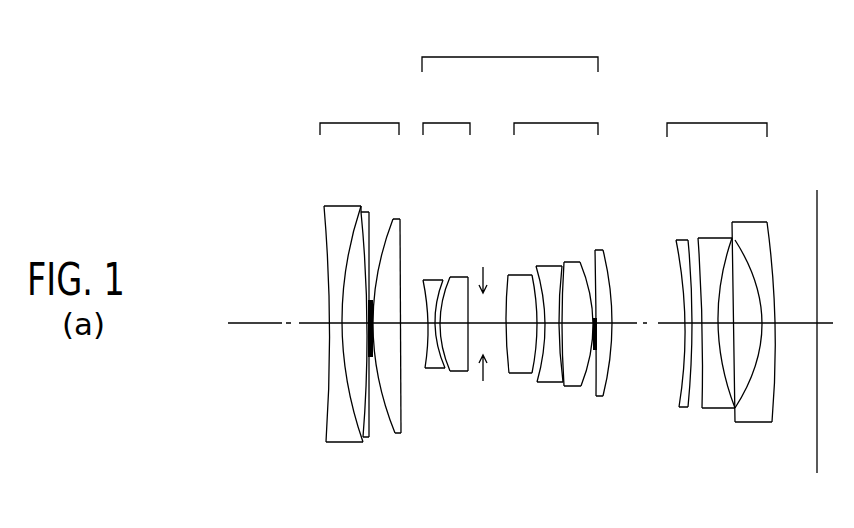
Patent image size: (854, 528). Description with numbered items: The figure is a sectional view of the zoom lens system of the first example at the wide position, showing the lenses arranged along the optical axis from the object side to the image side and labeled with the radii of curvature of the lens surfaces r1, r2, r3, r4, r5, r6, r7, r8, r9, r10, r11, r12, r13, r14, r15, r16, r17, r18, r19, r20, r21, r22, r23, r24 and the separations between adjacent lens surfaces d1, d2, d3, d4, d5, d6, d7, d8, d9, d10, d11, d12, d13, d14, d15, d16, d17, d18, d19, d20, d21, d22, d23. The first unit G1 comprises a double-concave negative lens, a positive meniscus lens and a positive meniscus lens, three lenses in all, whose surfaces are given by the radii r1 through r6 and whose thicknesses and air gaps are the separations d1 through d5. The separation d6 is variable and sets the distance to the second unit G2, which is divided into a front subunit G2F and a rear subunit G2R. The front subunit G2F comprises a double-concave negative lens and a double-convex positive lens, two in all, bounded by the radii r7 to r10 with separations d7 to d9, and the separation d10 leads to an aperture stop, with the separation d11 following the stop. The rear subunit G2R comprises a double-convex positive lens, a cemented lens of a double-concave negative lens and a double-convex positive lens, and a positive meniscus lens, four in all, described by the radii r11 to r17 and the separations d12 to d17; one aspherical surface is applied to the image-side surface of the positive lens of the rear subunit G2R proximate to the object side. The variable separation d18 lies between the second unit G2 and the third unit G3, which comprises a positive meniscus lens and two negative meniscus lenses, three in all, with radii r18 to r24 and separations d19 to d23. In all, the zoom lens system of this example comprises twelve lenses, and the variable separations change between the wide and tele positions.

The first unit G1 is at (359, 113).
The second unit G2 is at (510, 49).
The front subunit G2F is at (446, 113).
The rear subunit G2R is at (555, 113).
The third unit G3 is at (717, 114).
The radius of curvature of the first lens surface r1 is at (322, 220).
The radius of curvature of the second lens surface r2 is at (352, 228).
The radius of curvature of the third lens surface r3 is at (358, 240).
The radius of curvature of the fourth lens surface r4 is at (373, 217).
The radius of curvature of the fifth lens surface r5 is at (392, 222).
The radius of curvature of the sixth lens surface r6 is at (402, 236).
The radius of curvature of the seventh lens surface r7 is at (423, 280).
The radius of curvature of the eighth lens surface r8 is at (443, 285).
The radius of curvature of the ninth lens surface r9 is at (452, 281).
The radius of curvature of the tenth lens surface r10 is at (484, 298).
The radius of curvature of the eleventh lens surface r11 is at (506, 280).
The radius of curvature of the twelfth lens surface r12 is at (532, 284).
The radius of curvature of the thirteenth lens surface r13 is at (539, 268).
The radius of curvature of the fourteenth lens surface r14 is at (549, 265).
The radius of curvature of the fifteenth lens surface r15 is at (564, 262).
The radius of curvature of the sixteenth lens surface r16 is at (580, 262).
The radius of curvature of the seventeenth lens surface r17 is at (600, 251).
The radius of curvature of the eighteenth lens surface r18 is at (611, 275).
The radius of curvature of the nineteenth lens surface r19 is at (677, 257).
The radius of curvature of the twentieth lens surface r20 is at (688, 240).
The radius of curvature of the twenty-first lens surface r21 is at (705, 243).
The radius of curvature of the twenty-second lens surface r22 is at (725, 238).
The radius of curvature of the twenty-third lens surface r23 is at (752, 222).
The radius of curvature of the twenty-fourth lens surface r24 is at (770, 247).
The separation between adjacent lens surfaces d1 is at (332, 330).
The separation between adjacent lens surfaces d2 is at (345, 332).
The separation between adjacent lens surfaces d3 is at (366, 330).
The separation between adjacent lens surfaces d4 is at (372, 330).
The separation between adjacent lens surfaces d5 is at (388, 330).
The separation between adjacent lens surfaces d6 is at (413, 333).
The separation between adjacent lens surfaces d7 is at (431, 340).
The separation between adjacent lens surfaces d8 is at (438, 345).
The separation between adjacent lens surfaces d9 is at (455, 330).
The separation between adjacent lens surfaces d10 is at (476, 340).
The separation between adjacent lens surfaces d11 is at (495, 338).
The separation between adjacent lens surfaces d12 is at (522, 374).
The separation between adjacent lens surfaces d13 is at (546, 380).
The separation between adjacent lens surfaces d14 is at (555, 382).
The separation between adjacent lens surfaces d15 is at (572, 388).
The separation between adjacent lens surfaces d16 is at (597, 388).
The separation between adjacent lens surfaces d17 is at (606, 350).
The separation between adjacent lens surfaces d18 is at (648, 340).
The separation between adjacent lens surfaces d19 is at (683, 353).
The separation between adjacent lens surfaces d20 is at (698, 330).
The separation between adjacent lens surfaces d21 is at (710, 330).
The separation between adjacent lens surfaces d22 is at (727, 350).
The separation between adjacent lens surfaces d23 is at (748, 330).